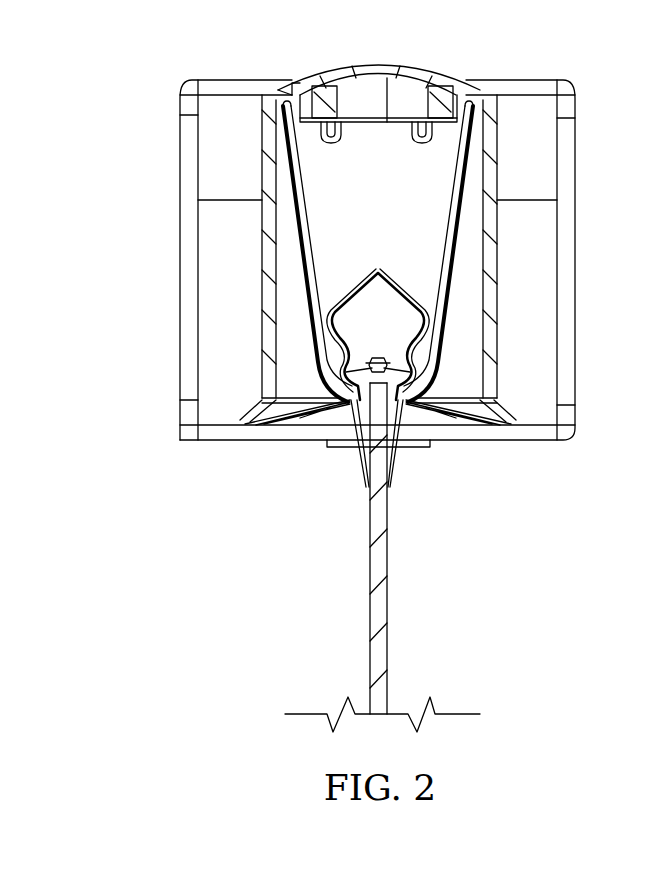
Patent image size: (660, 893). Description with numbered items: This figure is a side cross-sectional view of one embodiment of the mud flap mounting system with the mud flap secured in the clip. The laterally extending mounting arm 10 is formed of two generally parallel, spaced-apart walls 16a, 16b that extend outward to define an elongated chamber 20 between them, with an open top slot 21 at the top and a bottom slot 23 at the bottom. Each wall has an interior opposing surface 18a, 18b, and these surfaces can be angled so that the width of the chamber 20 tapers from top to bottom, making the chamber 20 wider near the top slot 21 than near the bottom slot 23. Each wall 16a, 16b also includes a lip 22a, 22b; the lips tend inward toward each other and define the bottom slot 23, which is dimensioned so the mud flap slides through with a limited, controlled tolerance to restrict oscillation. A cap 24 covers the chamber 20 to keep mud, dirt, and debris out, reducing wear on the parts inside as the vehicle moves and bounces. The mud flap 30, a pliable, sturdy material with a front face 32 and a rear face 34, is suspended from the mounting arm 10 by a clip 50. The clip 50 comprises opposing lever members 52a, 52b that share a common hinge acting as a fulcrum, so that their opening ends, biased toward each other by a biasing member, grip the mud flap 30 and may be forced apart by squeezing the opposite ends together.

The mounting arm 10 is at (120, 107).
The wall 16a is at (262, 275).
The wall 16b is at (496, 280).
The interior opposing surface 18a is at (304, 180).
The interior opposing surface 18b is at (452, 187).
The elongated chamber 20 is at (386, 153).
The top slot 21 is at (296, 84).
The lip 22a is at (302, 394).
The lip 22b is at (442, 400).
The bottom slot 23 is at (325, 428).
The cap 24 is at (342, 65).
The mud flap 30 is at (382, 557).
The front face 32 is at (369, 527).
The rear face 34 is at (390, 565).
The clip 50 is at (371, 267).
The lever member 52a is at (364, 463).
The lever member 52b is at (394, 459).